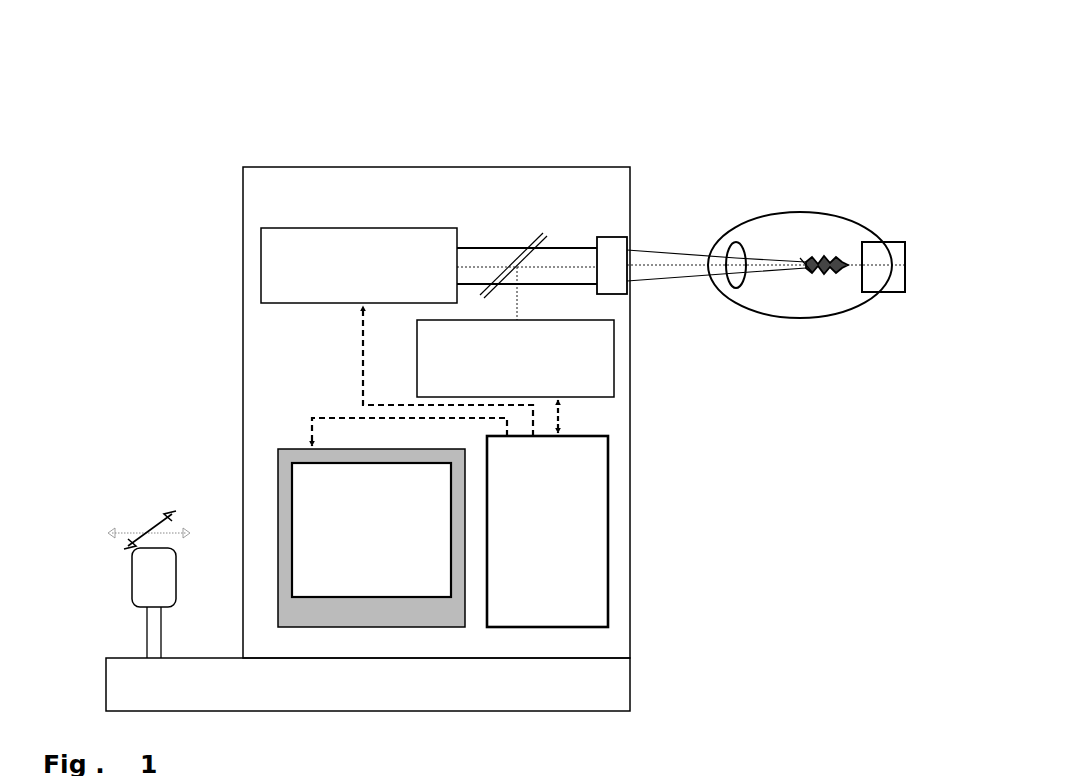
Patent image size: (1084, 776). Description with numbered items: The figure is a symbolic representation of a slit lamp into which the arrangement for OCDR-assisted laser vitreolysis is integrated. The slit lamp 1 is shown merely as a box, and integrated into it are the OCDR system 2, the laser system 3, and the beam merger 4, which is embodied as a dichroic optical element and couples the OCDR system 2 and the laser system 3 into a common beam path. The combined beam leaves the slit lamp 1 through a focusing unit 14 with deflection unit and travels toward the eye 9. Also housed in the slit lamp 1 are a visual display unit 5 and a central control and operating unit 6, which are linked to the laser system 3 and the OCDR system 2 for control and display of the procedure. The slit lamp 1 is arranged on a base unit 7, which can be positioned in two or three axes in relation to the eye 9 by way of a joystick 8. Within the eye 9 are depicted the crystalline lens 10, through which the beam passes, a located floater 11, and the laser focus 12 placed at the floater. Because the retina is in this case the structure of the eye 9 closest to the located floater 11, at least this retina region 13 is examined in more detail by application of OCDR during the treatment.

The slit lamp 1 is at (399, 165).
The OCDR system 2 is at (613, 367).
The laser system 3 is at (311, 228).
The beam merger 4 is at (544, 234).
The visual display unit 5 is at (278, 465).
The central control and operating unit 6 is at (608, 529).
The base unit 7 is at (630, 679).
The joystick 8 is at (150, 568).
The eye 9 is at (818, 315).
The crystalline lens 10 is at (736, 287).
The located floater 11 is at (843, 255).
The laser focus 12 is at (800, 256).
The retina region 13 is at (905, 292).
The focusing unit 14 is at (613, 237).